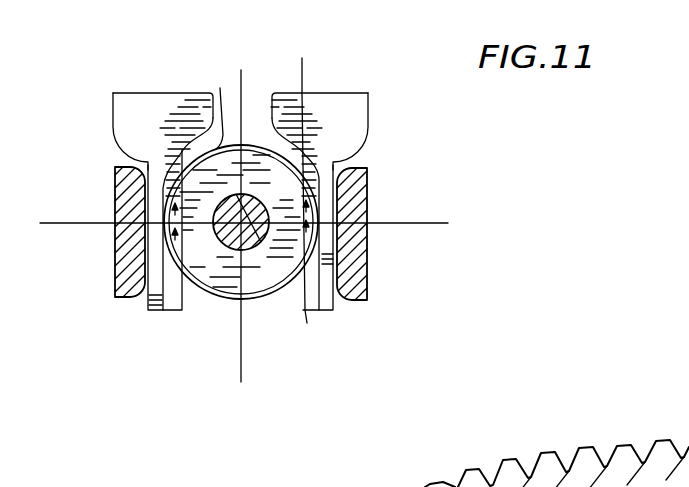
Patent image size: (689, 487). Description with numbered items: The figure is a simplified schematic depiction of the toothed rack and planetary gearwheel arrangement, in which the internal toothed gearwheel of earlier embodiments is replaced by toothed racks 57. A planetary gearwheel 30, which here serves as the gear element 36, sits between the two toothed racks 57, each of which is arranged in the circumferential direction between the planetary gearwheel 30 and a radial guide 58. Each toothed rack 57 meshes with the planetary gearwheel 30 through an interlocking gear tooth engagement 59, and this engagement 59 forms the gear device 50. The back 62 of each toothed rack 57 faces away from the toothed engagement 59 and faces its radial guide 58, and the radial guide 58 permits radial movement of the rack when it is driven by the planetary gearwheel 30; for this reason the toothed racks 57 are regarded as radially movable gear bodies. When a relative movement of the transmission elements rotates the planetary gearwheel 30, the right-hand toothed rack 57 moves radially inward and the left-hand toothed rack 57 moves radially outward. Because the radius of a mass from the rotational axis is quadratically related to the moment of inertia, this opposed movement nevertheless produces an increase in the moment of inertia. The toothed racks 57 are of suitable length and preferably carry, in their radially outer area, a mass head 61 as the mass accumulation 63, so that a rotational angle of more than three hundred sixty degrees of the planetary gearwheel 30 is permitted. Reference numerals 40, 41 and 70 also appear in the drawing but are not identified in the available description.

The planetary gearwheel 30 is at (285, 157).
The gear element 36 is at (266, 143).
The yoke 40 is at (127, 111).
The pin 41 is at (262, 252).
The gear device 50 is at (199, 283).
The toothed rack 57 is at (145, 135).
The radial guide 58 is at (123, 198).
The interlocking gear tooth engagement 59 is at (257, 172).
The mass head 61 is at (182, 102).
The back 62 is at (137, 257).
The mass accumulation 63 is at (148, 105).
The ring 70 is at (217, 300).